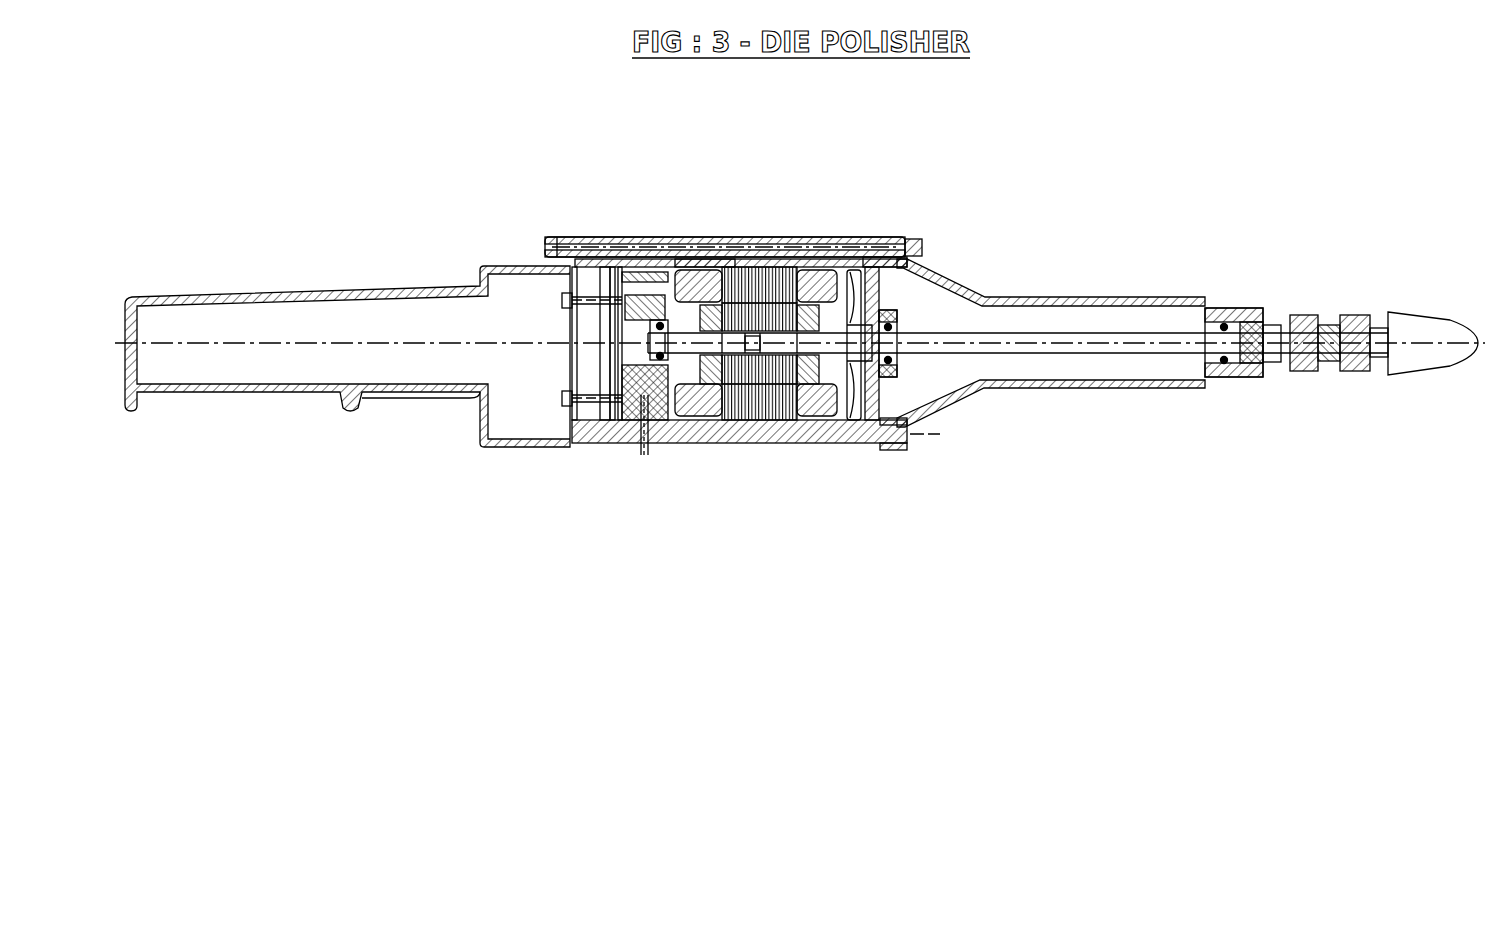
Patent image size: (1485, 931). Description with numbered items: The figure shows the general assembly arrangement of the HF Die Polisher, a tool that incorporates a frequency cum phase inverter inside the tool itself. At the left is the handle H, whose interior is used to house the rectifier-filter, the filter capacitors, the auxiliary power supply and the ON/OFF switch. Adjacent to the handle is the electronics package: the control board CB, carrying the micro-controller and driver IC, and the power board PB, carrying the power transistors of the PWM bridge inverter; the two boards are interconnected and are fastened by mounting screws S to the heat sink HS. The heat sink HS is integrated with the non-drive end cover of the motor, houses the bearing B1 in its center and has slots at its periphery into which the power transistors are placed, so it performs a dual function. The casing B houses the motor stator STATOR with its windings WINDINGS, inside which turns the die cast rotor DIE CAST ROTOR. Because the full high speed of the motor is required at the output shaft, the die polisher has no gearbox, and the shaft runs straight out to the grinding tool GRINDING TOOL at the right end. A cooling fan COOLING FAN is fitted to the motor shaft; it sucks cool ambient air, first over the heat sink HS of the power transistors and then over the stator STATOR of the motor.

The handle H is at (330, 292).
The mounting screws S is at (565, 398).
The control board CB is at (575, 267).
The power board PB is at (605, 272).
The casing B is at (770, 237).
The bearing B1 is at (690, 268).
The windings WINDINGS is at (822, 275).
The heat sink HS is at (626, 420).
The die-cast rotor DIE CAST ROTOR is at (733, 385).
The stator STATOR is at (765, 405).
The cooling fan COOLING FAN is at (857, 397).
The grinding tool GRINDING TOOL is at (1387, 373).